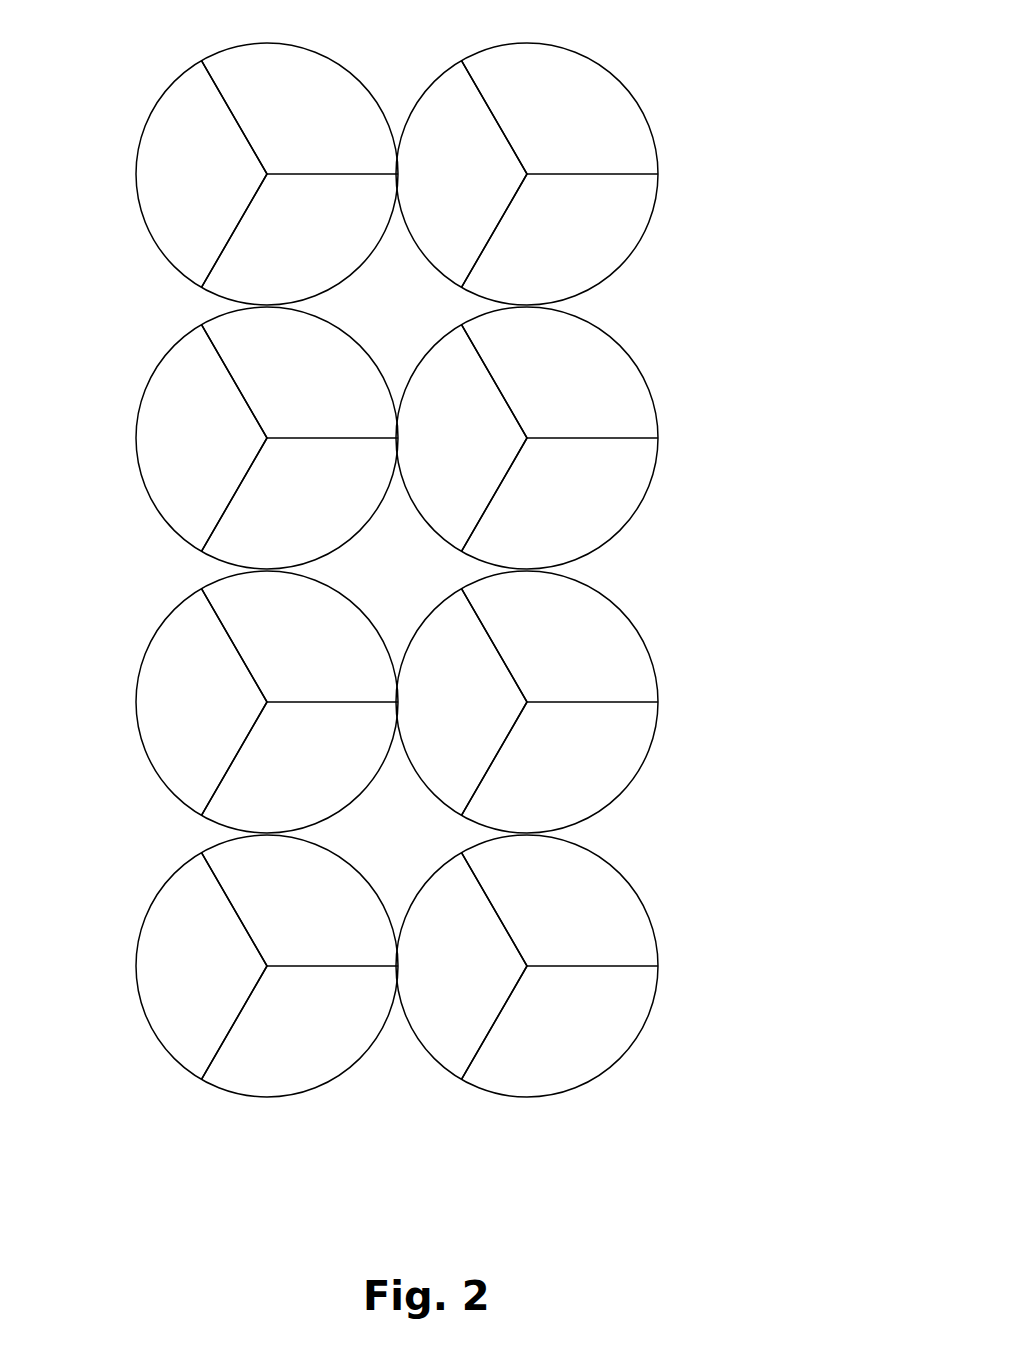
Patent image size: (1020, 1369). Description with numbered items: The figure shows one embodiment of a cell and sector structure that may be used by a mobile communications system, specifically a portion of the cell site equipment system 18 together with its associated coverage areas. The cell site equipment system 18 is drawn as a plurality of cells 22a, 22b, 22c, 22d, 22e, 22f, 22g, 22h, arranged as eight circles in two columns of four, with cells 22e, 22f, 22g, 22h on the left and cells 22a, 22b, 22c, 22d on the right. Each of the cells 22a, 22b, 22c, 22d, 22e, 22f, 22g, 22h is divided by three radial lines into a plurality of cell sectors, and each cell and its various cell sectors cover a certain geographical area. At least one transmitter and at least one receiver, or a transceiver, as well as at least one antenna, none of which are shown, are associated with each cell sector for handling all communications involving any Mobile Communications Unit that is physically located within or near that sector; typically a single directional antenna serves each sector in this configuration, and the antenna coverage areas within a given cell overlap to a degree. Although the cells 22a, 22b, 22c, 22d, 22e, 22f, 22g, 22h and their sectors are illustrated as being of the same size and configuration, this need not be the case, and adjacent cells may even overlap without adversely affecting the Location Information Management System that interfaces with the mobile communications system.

The cell site equipment system 18 is at (784, 141).
The cell 22a is at (665, 108).
The cell 22b is at (669, 387).
The cell 22c is at (666, 643).
The cell 22d is at (665, 910).
The cell 22e is at (144, 92).
The cell 22f is at (143, 352).
The cell 22g is at (143, 612).
The cell 22h is at (141, 884).